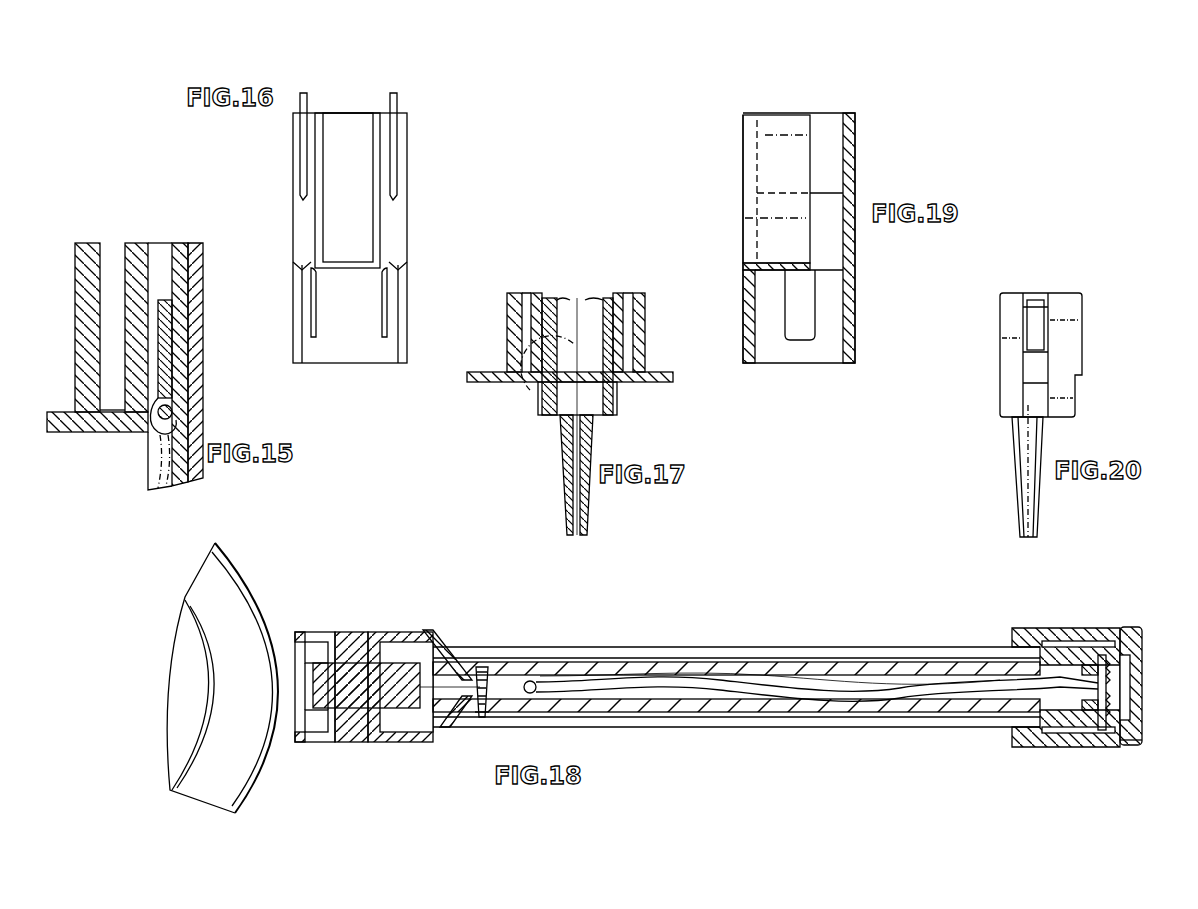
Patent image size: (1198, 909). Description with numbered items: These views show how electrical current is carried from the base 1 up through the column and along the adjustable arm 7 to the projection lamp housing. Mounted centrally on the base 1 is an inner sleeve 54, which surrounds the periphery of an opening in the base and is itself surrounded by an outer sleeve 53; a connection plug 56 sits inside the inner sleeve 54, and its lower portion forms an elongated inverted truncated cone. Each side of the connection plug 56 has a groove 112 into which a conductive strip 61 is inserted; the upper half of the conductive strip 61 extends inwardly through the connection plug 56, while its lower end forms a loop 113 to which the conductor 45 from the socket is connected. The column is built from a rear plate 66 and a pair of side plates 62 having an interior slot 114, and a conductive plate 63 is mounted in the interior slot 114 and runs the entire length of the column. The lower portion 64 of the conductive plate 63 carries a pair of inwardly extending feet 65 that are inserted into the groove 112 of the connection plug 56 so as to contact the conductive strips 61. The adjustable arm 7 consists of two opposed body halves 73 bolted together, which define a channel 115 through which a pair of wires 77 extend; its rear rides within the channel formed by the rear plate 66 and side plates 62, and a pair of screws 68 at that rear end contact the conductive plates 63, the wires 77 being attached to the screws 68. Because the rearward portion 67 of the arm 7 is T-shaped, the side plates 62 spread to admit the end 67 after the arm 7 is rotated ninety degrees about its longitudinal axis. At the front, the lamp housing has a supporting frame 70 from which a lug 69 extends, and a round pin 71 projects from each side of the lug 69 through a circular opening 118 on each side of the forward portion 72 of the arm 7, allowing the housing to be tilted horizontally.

In FIG. 17, the base 1 is at (648, 372).
In FIG. 18, the adjustable arm 7 is at (795, 735).
In FIG. 15, the conductor 45 is at (158, 455).
In FIG. 15, the outer sleeve 53 is at (89, 243).
In FIG. 15, the inner sleeve 54 is at (135, 250).
In FIG. 17, the inner sleeve 54 is at (616, 300).
In FIG. 15, the connection plug 56 is at (195, 270).
In FIG. 17, the connection plug 56 is at (618, 415).
In FIG. 20, the connection plug 56 is at (1062, 385).
In FIG. 15, the conductive strip 61 is at (176, 356).
In FIG. 17, the conductive strip 61 is at (548, 323).
In FIG. 20, the conductive strip 61 is at (1040, 337).
In FIG. 16, the side plate 62 is at (289, 163).
In FIG. 19, the side plate 62 is at (862, 184).
In FIG. 18, the side plate 62 is at (1068, 632).
In FIG. 16, the conductive plate 63 is at (397, 152).
In FIG. 19, the conductive plate 63 is at (830, 149).
In FIG. 18, the conductive plate 63 is at (1055, 735).
In FIG. 16, the lower portion of conductive plate 64 is at (400, 216).
In FIG. 19, the lower portion of conductive plate 64 is at (825, 240).
In FIG. 16, the inwardly extending feet 65 is at (387, 306).
In FIG. 18, the rear plate 66 is at (1140, 650).
In FIG. 18, the rearward portion of arm 67 is at (1140, 735).
In FIG. 18, the screws 68 is at (1100, 735).
In FIG. 18, the lug 69 is at (320, 735).
In FIG. 18, the supporting frame 70 is at (232, 775).
In FIG. 18, the round pin 71 is at (345, 640).
In FIG. 18, the forward portion of adjustable arm 72 is at (395, 640).
In FIG. 18, the body halves 73 is at (540, 665).
In FIG. 18, the wires 77 is at (876, 663).
In FIG. 15, the groove 112 is at (163, 258).
In FIG. 17, the groove 112 is at (612, 385).
In FIG. 20, the groove 112 is at (1046, 420).
In FIG. 15, the loop 113 is at (150, 438).
In FIG. 18, the interior slot 114 is at (1090, 655).
In FIG. 18, the channel 115 is at (715, 697).
In FIG. 18, the circular opening 118 is at (367, 742).